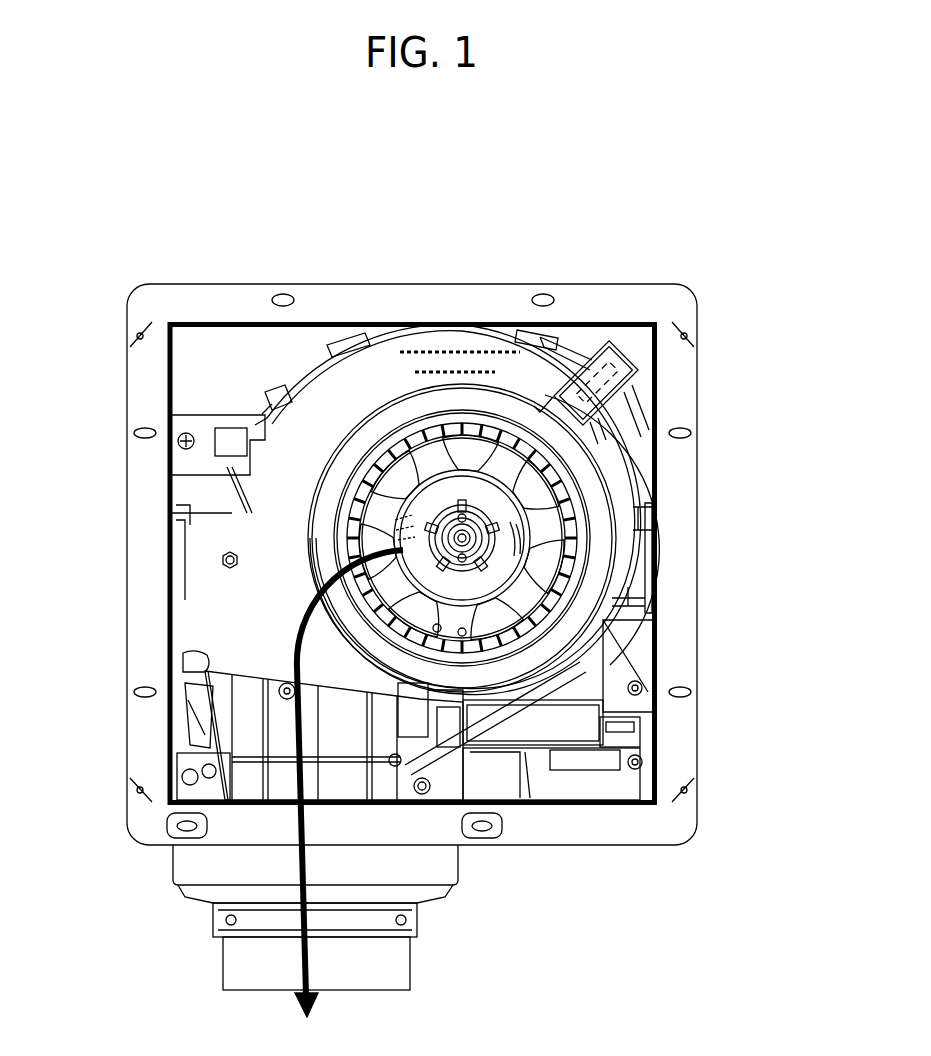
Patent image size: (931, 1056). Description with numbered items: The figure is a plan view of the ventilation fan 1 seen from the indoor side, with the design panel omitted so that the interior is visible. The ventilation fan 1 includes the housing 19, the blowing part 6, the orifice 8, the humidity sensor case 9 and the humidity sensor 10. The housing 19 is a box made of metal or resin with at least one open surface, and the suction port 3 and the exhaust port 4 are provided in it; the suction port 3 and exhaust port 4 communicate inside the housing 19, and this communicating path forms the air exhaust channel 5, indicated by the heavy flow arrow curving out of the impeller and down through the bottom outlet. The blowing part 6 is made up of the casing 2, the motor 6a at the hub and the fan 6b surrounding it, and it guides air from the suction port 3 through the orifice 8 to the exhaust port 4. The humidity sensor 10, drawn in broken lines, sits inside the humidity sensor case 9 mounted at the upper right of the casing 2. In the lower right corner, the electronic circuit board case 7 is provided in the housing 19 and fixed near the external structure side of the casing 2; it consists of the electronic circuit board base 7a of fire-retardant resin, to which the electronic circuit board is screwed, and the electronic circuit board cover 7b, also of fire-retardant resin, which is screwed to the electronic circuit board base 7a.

The ventilation fan 1 is at (721, 283).
The casing 2 is at (390, 368).
The suction port 3 is at (470, 462).
The exhaust port 4 is at (255, 965).
The air exhaust channel 5 is at (293, 658).
The blowing part 6 is at (543, 510).
The motor 6a is at (463, 532).
The fan 6b is at (547, 548).
The electronic circuit board case 7 is at (605, 762).
The electronic circuit board base 7a is at (608, 787).
The electronic circuit board cover 7b is at (604, 742).
The orifice 8 is at (523, 423).
The humidity sensor case 9 is at (600, 378).
The humidity sensor 10 is at (640, 370).
The housing 19 is at (237, 300).